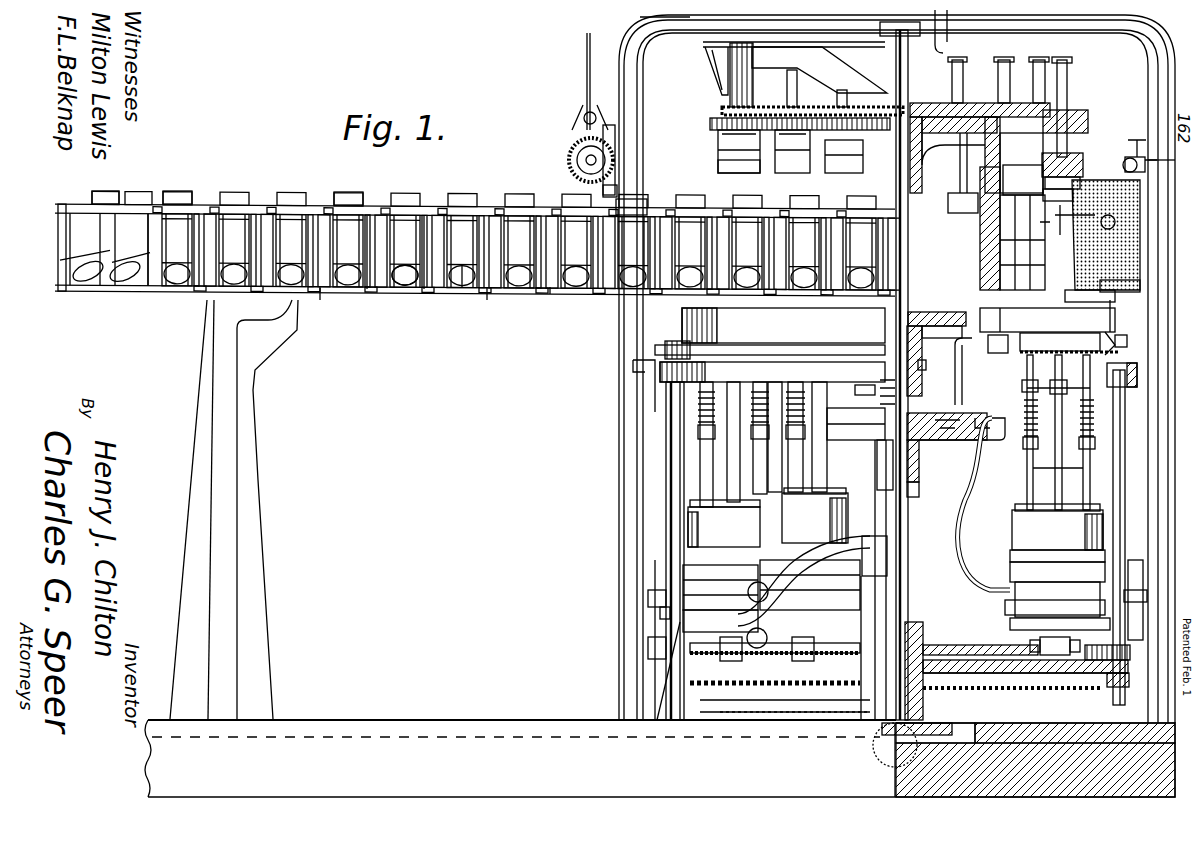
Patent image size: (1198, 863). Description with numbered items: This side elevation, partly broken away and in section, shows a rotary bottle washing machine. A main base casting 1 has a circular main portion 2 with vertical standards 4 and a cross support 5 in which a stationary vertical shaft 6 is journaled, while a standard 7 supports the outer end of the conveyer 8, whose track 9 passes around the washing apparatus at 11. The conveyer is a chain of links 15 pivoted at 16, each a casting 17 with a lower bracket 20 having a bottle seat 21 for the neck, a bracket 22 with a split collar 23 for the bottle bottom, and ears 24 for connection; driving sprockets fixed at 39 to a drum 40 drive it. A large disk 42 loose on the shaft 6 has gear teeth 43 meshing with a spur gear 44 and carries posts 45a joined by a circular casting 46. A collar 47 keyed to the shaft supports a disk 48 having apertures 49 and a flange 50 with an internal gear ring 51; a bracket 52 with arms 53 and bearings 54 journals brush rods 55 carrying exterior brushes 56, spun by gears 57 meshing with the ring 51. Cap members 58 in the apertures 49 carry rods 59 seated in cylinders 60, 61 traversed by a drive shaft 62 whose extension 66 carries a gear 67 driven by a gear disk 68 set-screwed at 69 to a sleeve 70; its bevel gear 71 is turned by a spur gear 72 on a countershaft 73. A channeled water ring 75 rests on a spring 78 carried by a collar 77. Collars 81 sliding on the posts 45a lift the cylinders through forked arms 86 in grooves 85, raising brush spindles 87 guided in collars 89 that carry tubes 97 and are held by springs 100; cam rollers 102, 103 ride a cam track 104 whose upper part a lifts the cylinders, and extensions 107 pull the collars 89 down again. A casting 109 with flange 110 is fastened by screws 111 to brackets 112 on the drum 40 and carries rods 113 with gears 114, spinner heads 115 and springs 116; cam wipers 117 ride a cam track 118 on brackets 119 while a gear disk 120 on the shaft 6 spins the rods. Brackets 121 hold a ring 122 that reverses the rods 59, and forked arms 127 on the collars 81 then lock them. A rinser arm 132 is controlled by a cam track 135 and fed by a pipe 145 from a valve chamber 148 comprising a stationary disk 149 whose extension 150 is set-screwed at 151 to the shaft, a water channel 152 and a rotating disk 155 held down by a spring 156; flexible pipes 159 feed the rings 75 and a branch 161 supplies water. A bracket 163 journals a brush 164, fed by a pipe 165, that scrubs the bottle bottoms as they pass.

The main base casting 1 is at (512, 719).
The circular main portion 2 is at (42, 207).
The vertical standards 4 is at (1148, 88).
The cross support 5 is at (665, 17).
The vertical shaft 6 is at (733, 625).
The standard 7 is at (235, 509).
The conveyer 8 is at (356, 200).
The conveyer track 9 is at (400, 292).
The track portion around the washing apparatus 11 is at (600, 133).
The links 15 is at (258, 196).
The pivotal connection 16 is at (430, 212).
The casting 17 is at (192, 204).
The lower bracket 20 is at (552, 296).
The bottle seat 21 is at (460, 294).
The bracket 22 is at (132, 205).
The split collar 23 is at (377, 210).
The ear 24 is at (160, 210).
The fastening of sprockets to drum 39 is at (1036, 183).
The drum 40 is at (1000, 228).
The disk 42 is at (790, 653).
The gear teeth 43 is at (1115, 688).
The spur gear 44 is at (868, 702).
The posts 45a is at (1127, 510).
The circular casting 46 is at (650, 382).
The collar 47 is at (912, 372).
The disk 48 is at (934, 361).
The apertures 49 is at (1128, 345).
The annular upstanding flange 50 is at (783, 325).
The internal gear ring 51 is at (1100, 338).
The bracket 52 is at (1142, 260).
The arms 53 is at (1125, 312).
The bearing 54 is at (1137, 140).
The brush rod 55 is at (1120, 245).
The brush 56 is at (1115, 225).
The gear 57 is at (1115, 340).
The cap members 58 is at (1022, 365).
The rods 59 is at (730, 472).
The upper cylinder 60 is at (895, 519).
The cylinder 61 is at (690, 590).
The drive shaft 62 is at (755, 466).
The extension 66 is at (720, 655).
The gear 67 is at (742, 655).
The gear disk 68 is at (997, 674).
The set screw 69 is at (918, 662).
The sleeve 70 is at (923, 640).
The bevel gear 71 is at (950, 720).
The spur gear 72 is at (885, 765).
The countershaft 73 is at (875, 748).
The channeled ring 75 is at (868, 690).
The collar 77 is at (1012, 626).
The coiled expansion spring 78 is at (665, 650).
The collars 81 is at (683, 575).
The annular groove 85 is at (1012, 556).
The forked arm 86 is at (688, 530).
The brush spindle 87 is at (1090, 456).
The collar 89 is at (1050, 390).
The tube 97 is at (1027, 388).
The coiled springs 100 is at (1024, 418).
The cam roller 102 is at (648, 597).
The cam roller 103 is at (650, 655).
The cam track 104 is at (660, 612).
The right-angled extension 107 is at (1045, 612).
The casting 109 is at (720, 113).
The flange 110 is at (1030, 140).
The screws 111 is at (980, 182).
The brackets 112 is at (950, 210).
The rods 113 is at (1078, 73).
The gears 114 is at (1090, 120).
The spinner heads 115 is at (718, 170).
The coiled expansion springs 116 is at (718, 140).
The cam wipers 117 is at (795, 50).
The cam track 118 is at (819, 70).
The brackets 119 is at (720, 92).
The gear disk 120 is at (935, 104).
The brackets 121 is at (660, 358).
The ring 122 is at (665, 345).
The forked arm 127 is at (1128, 640).
The arm 132 is at (1047, 311).
The cam-track 135 is at (950, 318).
The pipe 145 is at (1010, 355).
The water valve chamber 148 is at (850, 408).
The disk 149 is at (932, 442).
The reduced extension 150 is at (927, 494).
The set screw 151 is at (877, 462).
The water-channel 152 is at (962, 442).
The rotating disk 155 is at (950, 418).
The coiled expansion spring 156 is at (880, 392).
The pipes 159 is at (968, 538).
The branch 161 is at (927, 124).
The bracket 163 is at (618, 190).
The brush 164 is at (572, 172).
The pipe 165 is at (588, 78).
The upper part of cam track a is at (812, 619).